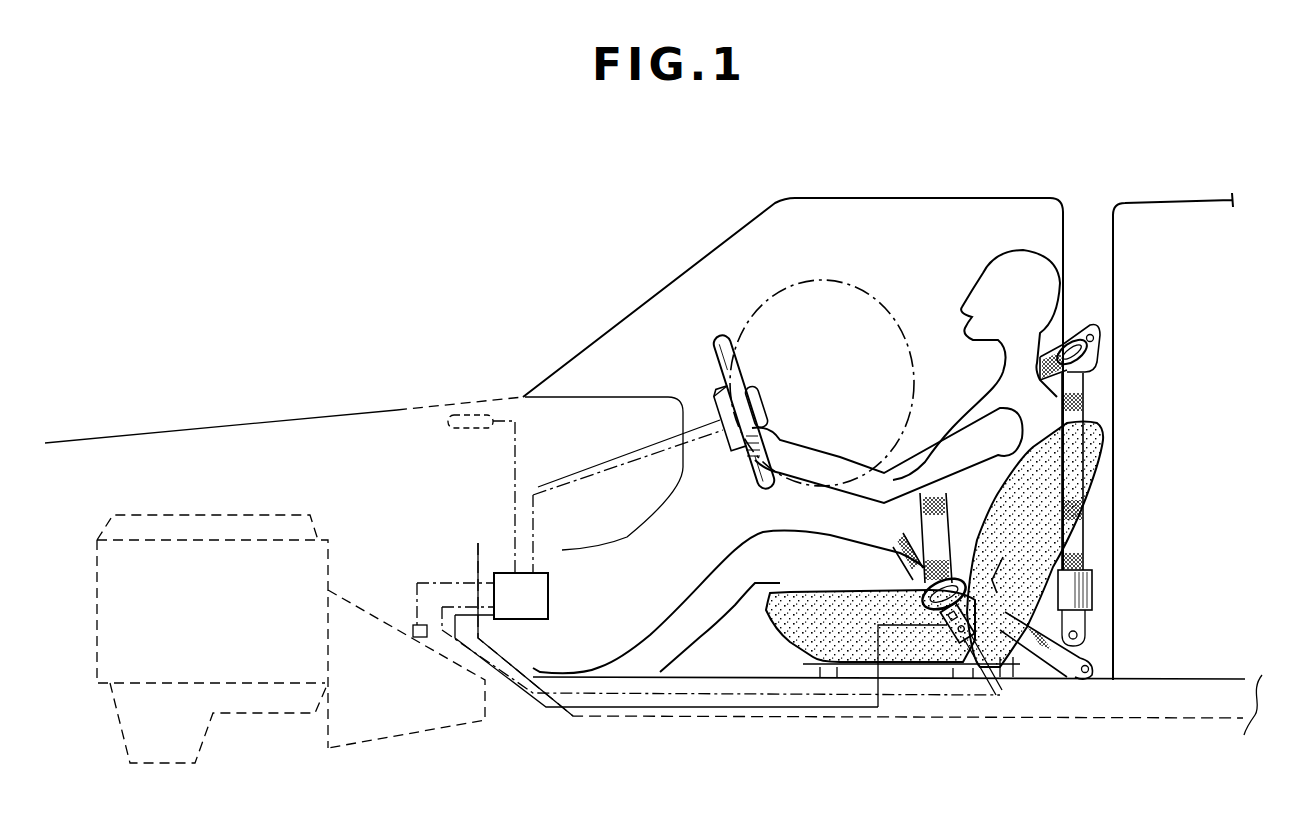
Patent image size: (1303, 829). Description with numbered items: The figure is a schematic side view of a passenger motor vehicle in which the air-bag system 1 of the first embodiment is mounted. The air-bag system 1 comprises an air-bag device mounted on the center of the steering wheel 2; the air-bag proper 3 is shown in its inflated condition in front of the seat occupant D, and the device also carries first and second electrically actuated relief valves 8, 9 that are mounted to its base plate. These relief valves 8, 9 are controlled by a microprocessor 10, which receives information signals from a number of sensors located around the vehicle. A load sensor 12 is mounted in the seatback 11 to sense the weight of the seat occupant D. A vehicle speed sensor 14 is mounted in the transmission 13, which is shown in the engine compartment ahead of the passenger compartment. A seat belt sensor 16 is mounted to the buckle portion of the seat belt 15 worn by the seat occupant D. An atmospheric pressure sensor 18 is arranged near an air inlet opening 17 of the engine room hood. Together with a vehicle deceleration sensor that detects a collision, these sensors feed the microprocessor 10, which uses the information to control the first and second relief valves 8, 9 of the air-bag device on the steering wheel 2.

The air-bag system 1 is at (655, 366).
The steering wheel 2 is at (715, 338).
The air-bag proper 3 is at (846, 289).
The first electrically actuated relief valve 8 is at (718, 437).
The second electrically actuated relief valve 9 is at (737, 445).
The microprocessor 10 is at (548, 603).
The seatback 11 is at (1090, 465).
The load sensor 12 is at (1000, 580).
The transmission 13 is at (388, 726).
The vehicle speed sensor 14 is at (412, 625).
The seat belt 15 is at (940, 543).
The seat belt sensor 16 is at (988, 645).
The air inlet opening 17 is at (412, 408).
The atmospheric pressure sensor 18 is at (465, 420).
The seat occupant D is at (1023, 255).